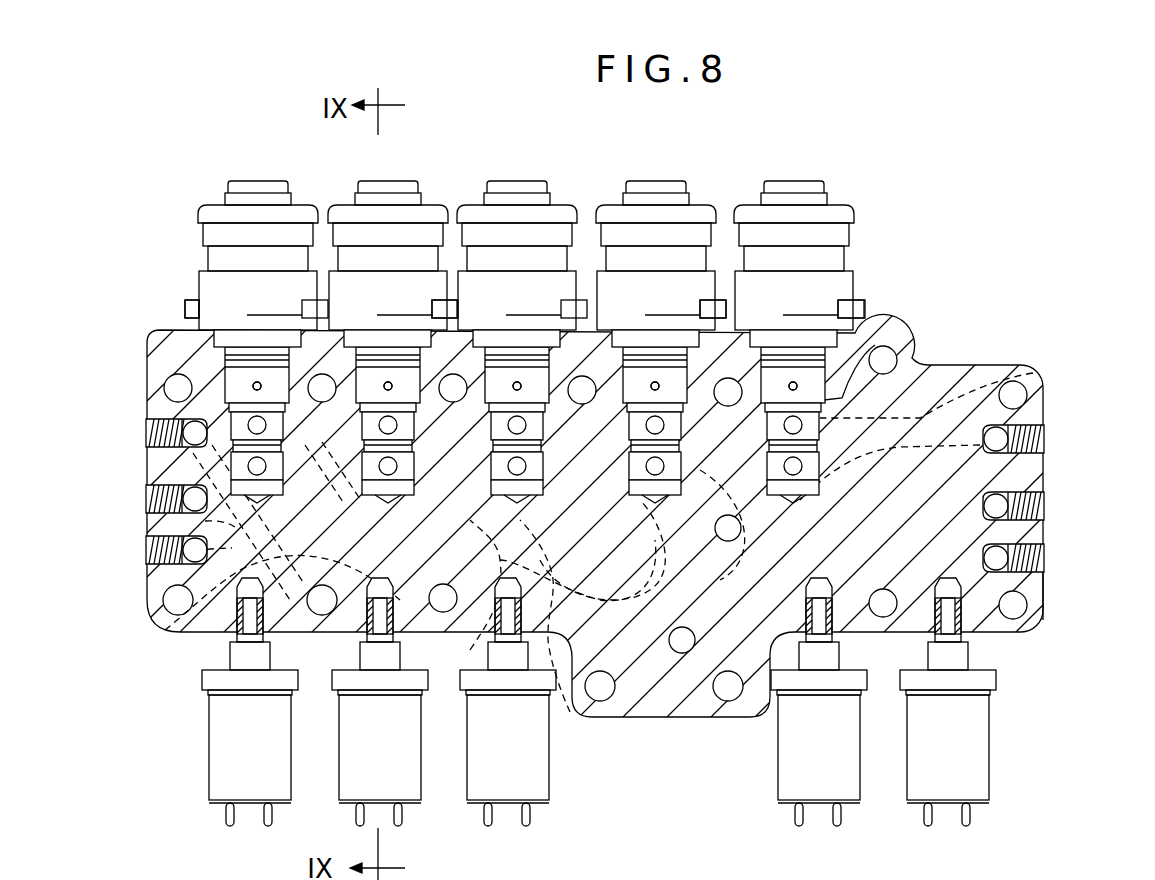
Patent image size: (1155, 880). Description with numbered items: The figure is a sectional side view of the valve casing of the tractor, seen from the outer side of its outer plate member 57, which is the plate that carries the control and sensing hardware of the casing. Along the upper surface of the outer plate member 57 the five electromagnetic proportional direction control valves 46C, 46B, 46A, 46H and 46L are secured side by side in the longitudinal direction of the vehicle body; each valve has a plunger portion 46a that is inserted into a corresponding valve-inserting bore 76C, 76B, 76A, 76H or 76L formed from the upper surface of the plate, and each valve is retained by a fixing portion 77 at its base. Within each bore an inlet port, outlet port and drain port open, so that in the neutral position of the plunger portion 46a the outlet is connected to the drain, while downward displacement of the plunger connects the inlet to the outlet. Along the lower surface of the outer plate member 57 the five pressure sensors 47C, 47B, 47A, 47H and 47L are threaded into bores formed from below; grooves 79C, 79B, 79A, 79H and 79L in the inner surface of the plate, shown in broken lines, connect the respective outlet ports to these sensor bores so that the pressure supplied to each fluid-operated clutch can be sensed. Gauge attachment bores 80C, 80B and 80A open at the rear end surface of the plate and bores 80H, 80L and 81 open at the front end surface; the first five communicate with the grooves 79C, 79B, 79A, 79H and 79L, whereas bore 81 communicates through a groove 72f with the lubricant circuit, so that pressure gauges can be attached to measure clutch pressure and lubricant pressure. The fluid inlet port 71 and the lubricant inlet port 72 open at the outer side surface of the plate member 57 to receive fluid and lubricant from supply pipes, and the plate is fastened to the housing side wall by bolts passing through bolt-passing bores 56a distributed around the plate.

The electromagnetic proportional direction control valve 46C is at (240, 225).
The electromagnetic proportional direction control valve 46B is at (414, 232).
The electromagnetic proportional direction control valve 46A is at (534, 230).
The electromagnetic proportional direction control valve 46H is at (697, 235).
The electromagnetic proportional direction control valve 46L is at (757, 232).
The plunger portion 46a is at (370, 386).
The mounting tab 77 is at (190, 303).
The bolt-passing bore 56a is at (458, 345).
The valve-inserting bore 76C is at (244, 384).
The valve-inserting bore 76B is at (400, 427).
The valve-inserting bore 76A is at (542, 392).
The valve-inserting bore 76H is at (683, 396).
The valve-inserting bore 76L is at (922, 360).
The outer plate member 57 is at (950, 382).
The groove 79L is at (1033, 373).
The groove 79C is at (147, 522).
The groove 79B is at (165, 631).
The groove 79A is at (470, 650).
The groove 79H is at (570, 712).
The gauge attachment bore 80C is at (148, 432).
The gauge attachment bore 80B is at (148, 499).
The gauge attachment bore 80A is at (147, 553).
The gauge attachment bore 80L is at (1045, 438).
The gauge attachment bore 80H is at (1045, 505).
The gauge attachment bore 81 is at (1045, 556).
The groove 72f is at (1043, 598).
The lubricant inlet port 72 is at (682, 653).
The fluid inlet port 71 is at (737, 538).
The pressure sensor 47C is at (215, 735).
The pressure sensor 47B is at (345, 745).
The pressure sensor 47A is at (547, 781).
The pressure sensor 47H is at (787, 790).
The pressure sensor 47L is at (985, 775).